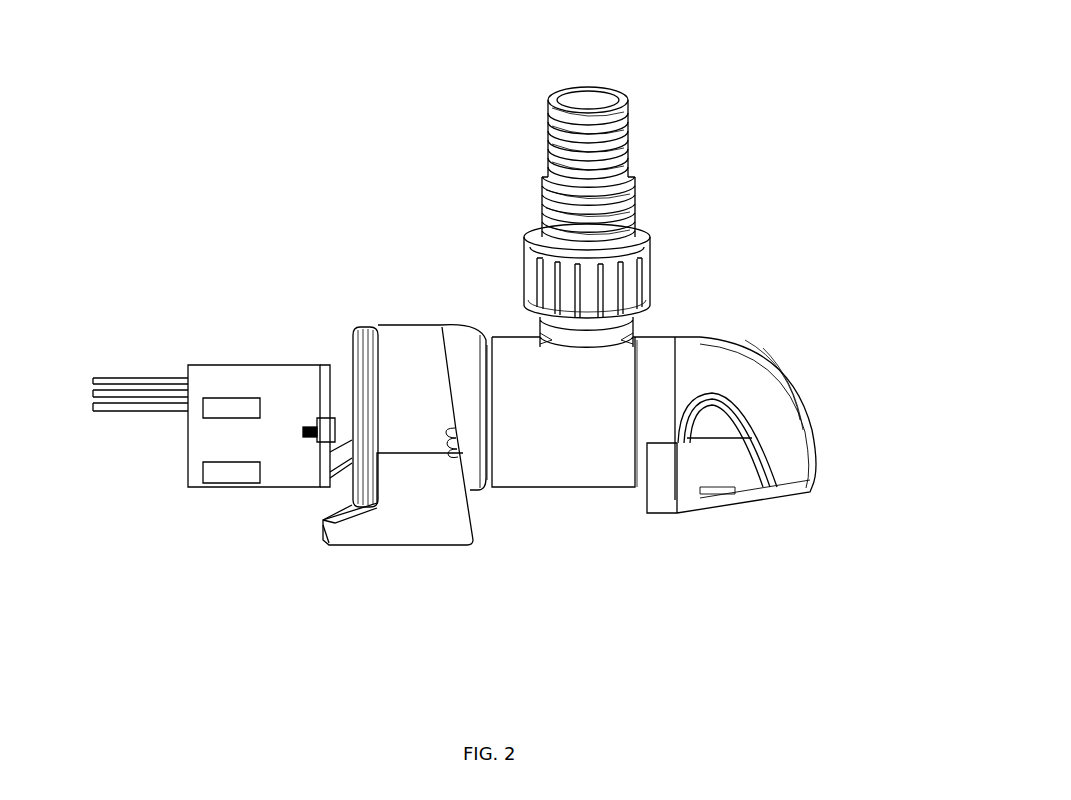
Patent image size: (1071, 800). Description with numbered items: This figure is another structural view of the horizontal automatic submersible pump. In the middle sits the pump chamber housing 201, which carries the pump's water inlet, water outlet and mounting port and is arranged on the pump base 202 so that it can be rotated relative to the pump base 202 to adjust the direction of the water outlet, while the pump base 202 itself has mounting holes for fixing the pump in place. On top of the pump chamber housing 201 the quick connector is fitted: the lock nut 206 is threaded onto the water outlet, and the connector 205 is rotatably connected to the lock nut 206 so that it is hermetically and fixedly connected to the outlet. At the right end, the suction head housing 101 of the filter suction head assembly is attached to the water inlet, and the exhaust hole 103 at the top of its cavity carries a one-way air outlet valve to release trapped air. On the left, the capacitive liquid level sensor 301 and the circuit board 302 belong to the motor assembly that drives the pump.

The suction head housing 101 is at (757, 430).
The exhaust hole 103 is at (695, 343).
The pump chamber housing 201 is at (552, 427).
The pump base 202 is at (407, 453).
The connector 205 is at (590, 187).
The lock nut 206 is at (535, 273).
The capacitive liquid level sensor 301 is at (223, 407).
The circuit board 302 is at (283, 397).